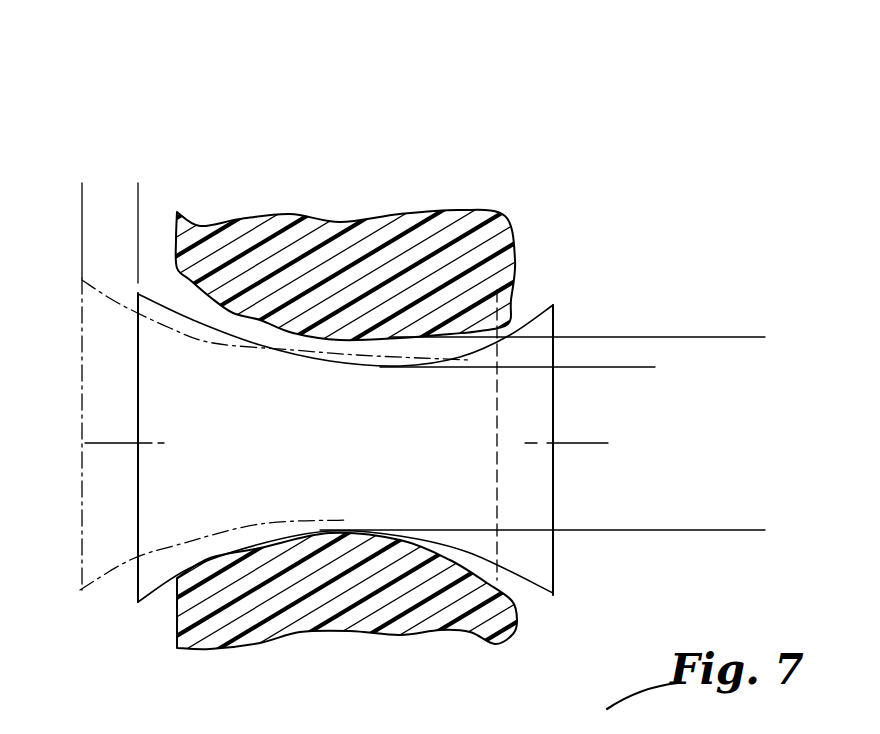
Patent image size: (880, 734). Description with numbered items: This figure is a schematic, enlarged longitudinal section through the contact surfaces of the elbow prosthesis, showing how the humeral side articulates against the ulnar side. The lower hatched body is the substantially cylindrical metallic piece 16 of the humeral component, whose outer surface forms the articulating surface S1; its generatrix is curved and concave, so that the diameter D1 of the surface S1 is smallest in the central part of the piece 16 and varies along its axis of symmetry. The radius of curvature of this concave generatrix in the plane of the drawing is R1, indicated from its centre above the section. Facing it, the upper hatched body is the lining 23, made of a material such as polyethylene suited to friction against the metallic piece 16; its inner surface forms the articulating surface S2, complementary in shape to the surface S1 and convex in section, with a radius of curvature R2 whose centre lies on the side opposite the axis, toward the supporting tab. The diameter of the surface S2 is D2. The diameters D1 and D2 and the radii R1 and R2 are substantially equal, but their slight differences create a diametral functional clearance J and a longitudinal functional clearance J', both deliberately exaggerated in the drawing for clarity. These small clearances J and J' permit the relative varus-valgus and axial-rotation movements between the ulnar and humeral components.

The lining 23 is at (490, 214).
The piece 16 is at (530, 553).
The radius of curvature of generatrix G1 R1 is at (460, 300).
The radius of curvature of generatrix G2 R2 is at (352, 0).
The articulating surface S1 is at (535, 307).
The articulating surface S2 is at (262, 323).
The diametral functional clearance J is at (651, 337).
The longitudinal functional clearance J' is at (111, 223).
The diameter of surface S1 D1 is at (642, 530).
The diameter of surface S2 D2 is at (752, 337).